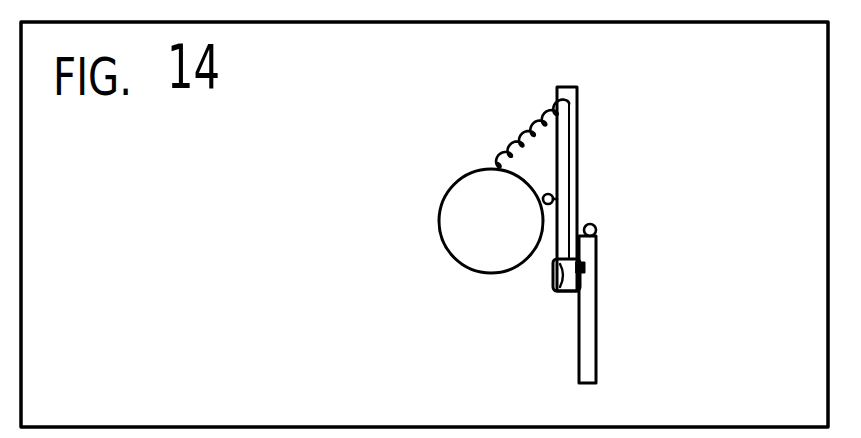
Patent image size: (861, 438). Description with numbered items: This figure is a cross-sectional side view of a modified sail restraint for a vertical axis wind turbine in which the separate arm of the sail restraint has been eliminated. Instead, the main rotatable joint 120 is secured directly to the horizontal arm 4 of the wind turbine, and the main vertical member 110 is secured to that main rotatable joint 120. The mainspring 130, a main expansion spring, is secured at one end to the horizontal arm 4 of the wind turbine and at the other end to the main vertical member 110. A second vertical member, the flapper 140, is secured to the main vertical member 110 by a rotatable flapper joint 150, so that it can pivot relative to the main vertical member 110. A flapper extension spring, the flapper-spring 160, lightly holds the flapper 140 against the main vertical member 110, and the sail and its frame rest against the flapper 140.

The horizontal arm 4 is at (440, 234).
The main vertical member 110 is at (578, 123).
The main rotatable joint 120 is at (553, 198).
The mainspring 130 is at (521, 138).
The flapper 140 is at (596, 333).
The rotatable flapper joint 150 is at (596, 227).
The flapper-spring 160 is at (557, 291).